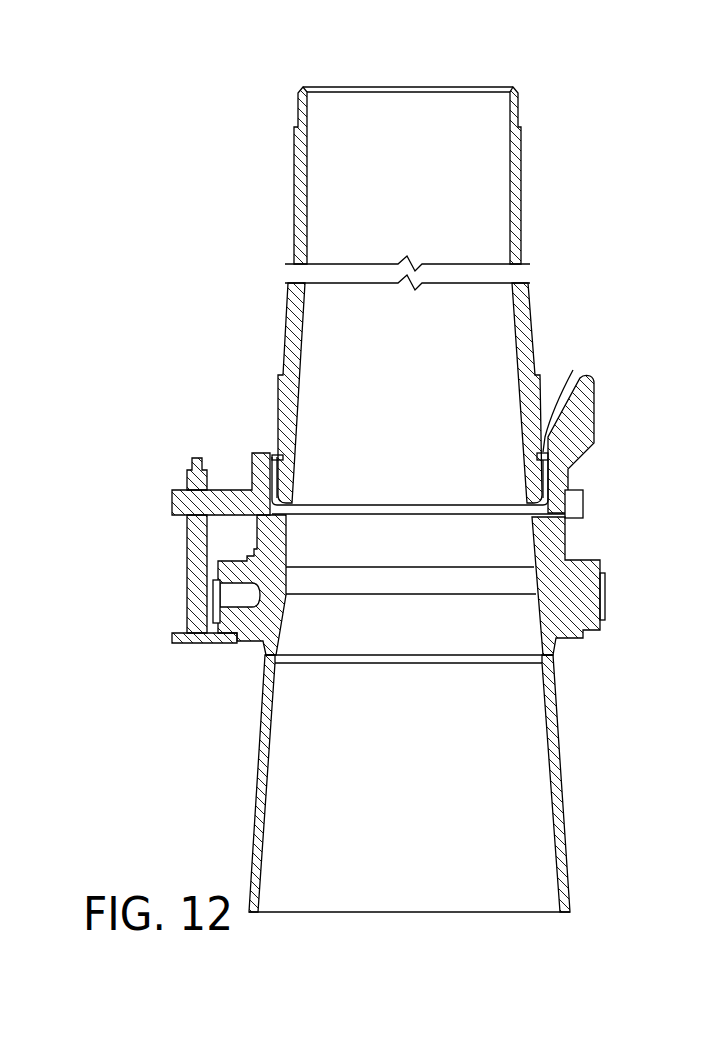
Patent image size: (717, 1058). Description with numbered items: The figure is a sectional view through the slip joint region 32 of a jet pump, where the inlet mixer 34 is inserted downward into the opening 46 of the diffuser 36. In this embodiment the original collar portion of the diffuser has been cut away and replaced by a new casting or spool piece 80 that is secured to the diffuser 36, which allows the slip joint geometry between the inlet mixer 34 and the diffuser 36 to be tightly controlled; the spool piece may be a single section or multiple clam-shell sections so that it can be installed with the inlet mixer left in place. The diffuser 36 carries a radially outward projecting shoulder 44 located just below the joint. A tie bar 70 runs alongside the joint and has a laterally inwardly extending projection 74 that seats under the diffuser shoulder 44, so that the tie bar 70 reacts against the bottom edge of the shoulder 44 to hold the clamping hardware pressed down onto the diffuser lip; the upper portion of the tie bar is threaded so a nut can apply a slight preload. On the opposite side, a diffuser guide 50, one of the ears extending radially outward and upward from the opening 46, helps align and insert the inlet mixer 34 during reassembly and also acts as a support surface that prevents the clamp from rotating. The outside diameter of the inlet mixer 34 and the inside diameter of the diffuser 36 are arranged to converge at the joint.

The slip joint region 32 is at (606, 463).
The inlet mixer 34 is at (531, 320).
The diffuser 36 is at (560, 763).
The diffuser shoulder 44 is at (600, 565).
The opening 46 is at (573, 370).
The diffuser guides 50 is at (594, 410).
The tie bar 70 is at (187, 592).
The laterally inwardly extending projection 74 is at (213, 643).
The spool piece 80 is at (566, 481).